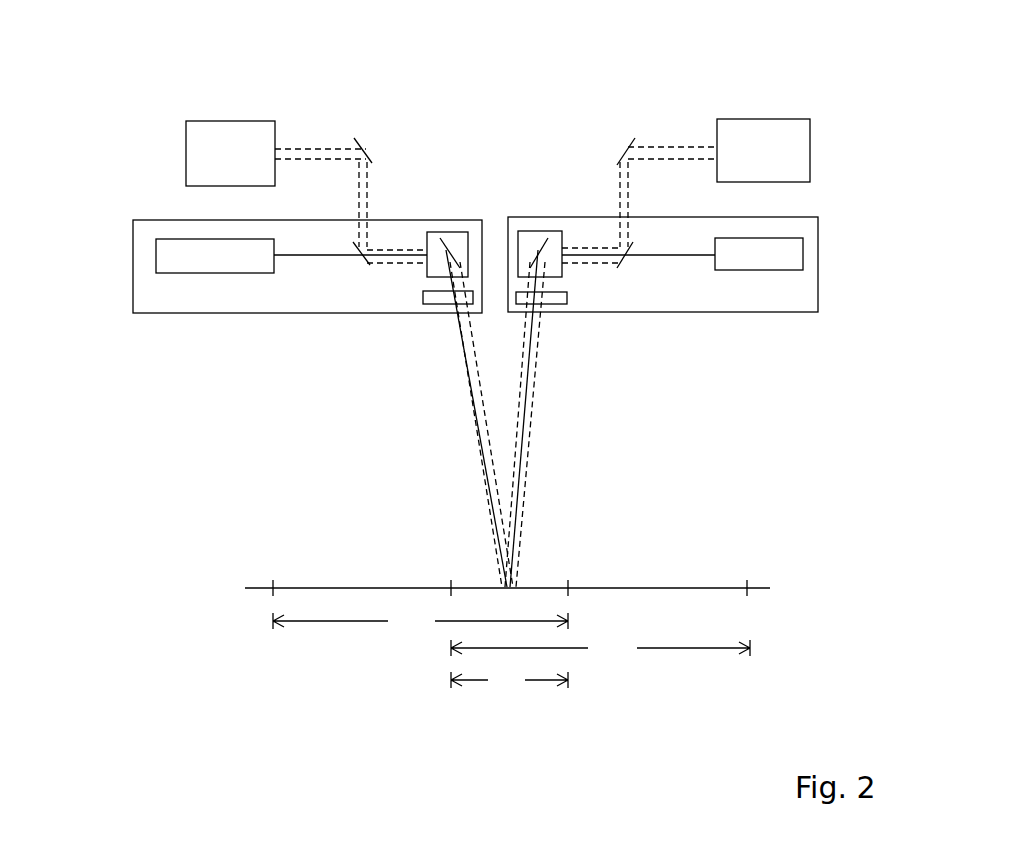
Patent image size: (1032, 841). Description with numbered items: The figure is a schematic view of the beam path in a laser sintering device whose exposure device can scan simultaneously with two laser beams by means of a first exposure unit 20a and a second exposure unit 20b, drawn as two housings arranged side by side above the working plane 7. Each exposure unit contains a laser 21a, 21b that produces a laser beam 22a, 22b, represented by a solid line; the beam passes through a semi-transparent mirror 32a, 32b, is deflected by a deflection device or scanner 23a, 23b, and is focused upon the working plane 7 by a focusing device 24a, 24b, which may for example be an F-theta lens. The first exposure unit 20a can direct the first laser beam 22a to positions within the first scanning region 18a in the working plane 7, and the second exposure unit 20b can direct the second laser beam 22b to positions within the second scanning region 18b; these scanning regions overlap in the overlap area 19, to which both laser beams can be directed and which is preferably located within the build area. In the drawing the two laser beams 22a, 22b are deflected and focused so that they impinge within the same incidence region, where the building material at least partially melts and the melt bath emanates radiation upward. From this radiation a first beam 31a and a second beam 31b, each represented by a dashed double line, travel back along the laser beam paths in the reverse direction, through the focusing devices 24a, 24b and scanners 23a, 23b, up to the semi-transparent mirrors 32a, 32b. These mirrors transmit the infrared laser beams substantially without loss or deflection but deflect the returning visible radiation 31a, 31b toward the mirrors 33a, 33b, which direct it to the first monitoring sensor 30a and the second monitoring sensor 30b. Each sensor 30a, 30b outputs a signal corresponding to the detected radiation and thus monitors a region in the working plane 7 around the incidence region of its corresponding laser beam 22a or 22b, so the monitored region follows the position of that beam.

The working plane 7 is at (707, 588).
The first scanning region 18a is at (420, 621).
The second scanning region 18b is at (600, 648).
The overlap area 19 is at (509, 680).
The first exposure unit 20a is at (152, 285).
The second exposure unit 20b is at (803, 285).
The laser 21a is at (178, 250).
The laser 21b is at (777, 252).
The first laser beam 22a is at (482, 442).
The second laser beam 22b is at (513, 527).
The deflection device (scanner) 23a is at (448, 235).
The deflection device (scanner) 23b is at (533, 255).
The focusing device 24a is at (440, 308).
The focusing device 24b is at (553, 312).
The first monitoring sensor 30a is at (203, 138).
The second monitoring sensor 30b is at (780, 135).
The first beam of radiation 31a is at (302, 147).
The second beam of radiation 31b is at (685, 150).
The semi-transparent mirror 32a is at (360, 243).
The semi-transparent mirror 32b is at (632, 262).
The mirror 33a is at (356, 141).
The mirror 33b is at (624, 142).